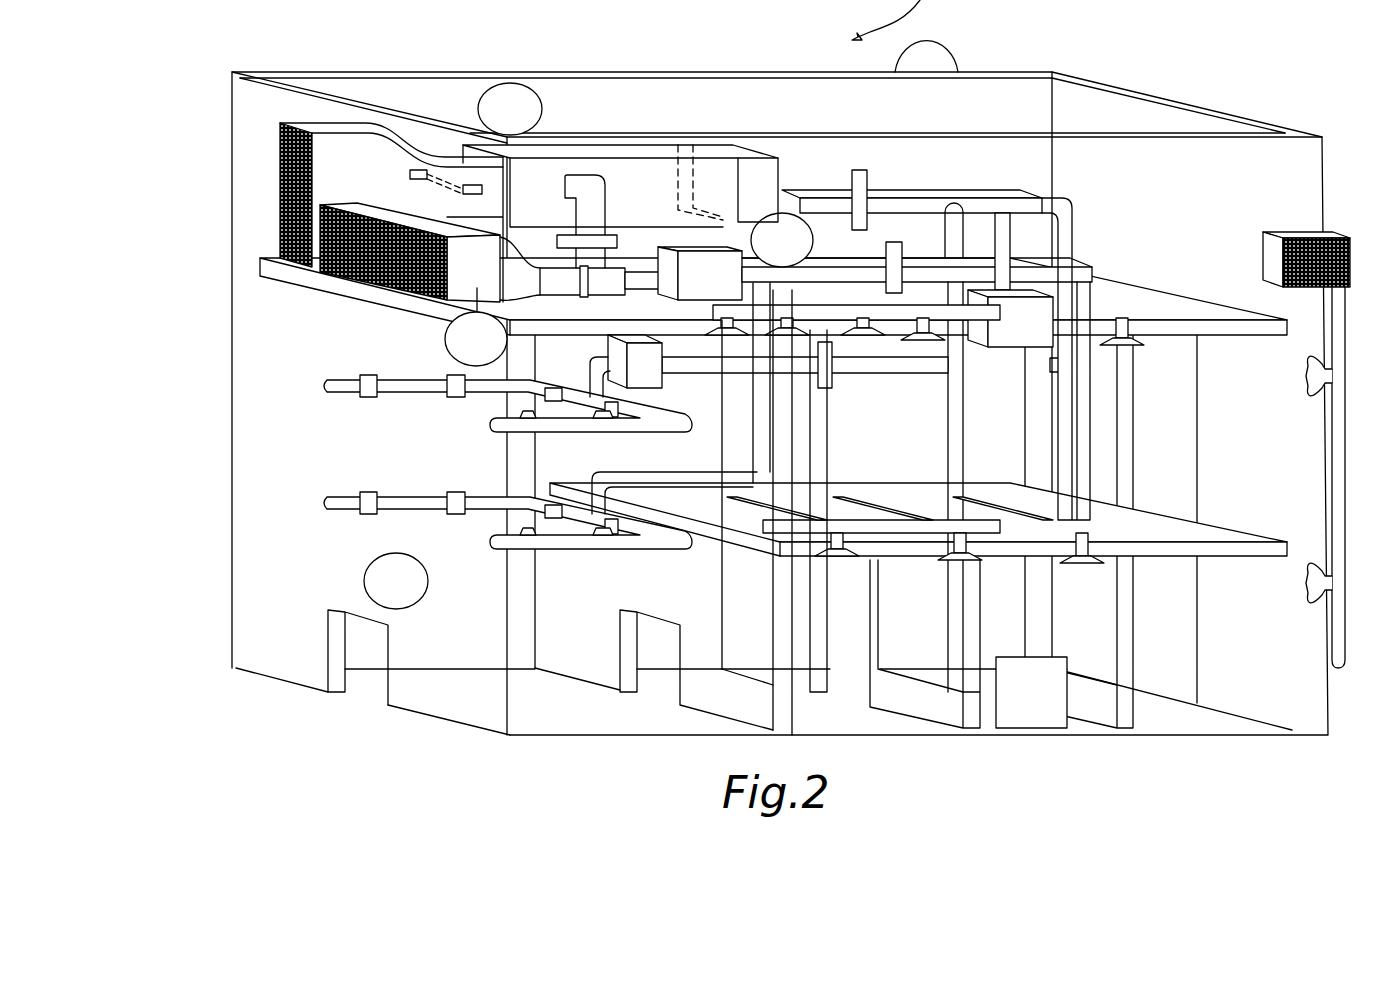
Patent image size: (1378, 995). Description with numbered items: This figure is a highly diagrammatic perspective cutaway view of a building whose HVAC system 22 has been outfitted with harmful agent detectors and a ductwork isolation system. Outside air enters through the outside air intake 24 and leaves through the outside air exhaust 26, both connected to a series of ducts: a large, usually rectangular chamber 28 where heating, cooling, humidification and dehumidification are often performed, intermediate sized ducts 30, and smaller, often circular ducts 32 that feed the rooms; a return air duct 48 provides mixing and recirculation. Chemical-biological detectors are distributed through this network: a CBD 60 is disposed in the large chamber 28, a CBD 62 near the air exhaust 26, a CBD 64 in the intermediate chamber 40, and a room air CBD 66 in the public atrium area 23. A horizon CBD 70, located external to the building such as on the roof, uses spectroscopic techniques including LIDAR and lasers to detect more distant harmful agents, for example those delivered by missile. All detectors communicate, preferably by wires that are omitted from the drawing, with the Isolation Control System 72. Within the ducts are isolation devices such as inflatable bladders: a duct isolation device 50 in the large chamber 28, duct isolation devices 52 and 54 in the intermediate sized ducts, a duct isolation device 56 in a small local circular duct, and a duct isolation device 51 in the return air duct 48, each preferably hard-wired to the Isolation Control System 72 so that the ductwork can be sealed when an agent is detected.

The HVAC system 22 is at (733, 95).
The public atrium area 23 is at (285, 578).
The outside air intake 24 is at (280, 175).
The outside air exhaust 26 is at (352, 275).
The large chamber 28 is at (590, 146).
The intermediate sized ducts 30 is at (893, 187).
The smaller ducts 32 is at (907, 372).
The intermediate chamber 40 is at (687, 247).
The return air duct 48 is at (608, 180).
The duct isolation device 50 is at (687, 143).
The duct isolation device 51 is at (558, 238).
The duct isolation device 52 is at (852, 170).
The duct isolation device 54 is at (902, 253).
The duct isolation device 56 is at (833, 380).
The CBD 60 is at (540, 95).
The CBD 62 is at (445, 338).
The CBD 64 is at (815, 228).
The room air CBD 66 is at (375, 560).
The horizon CBD 70 is at (958, 45).
The Isolation Control System 72 is at (1067, 693).